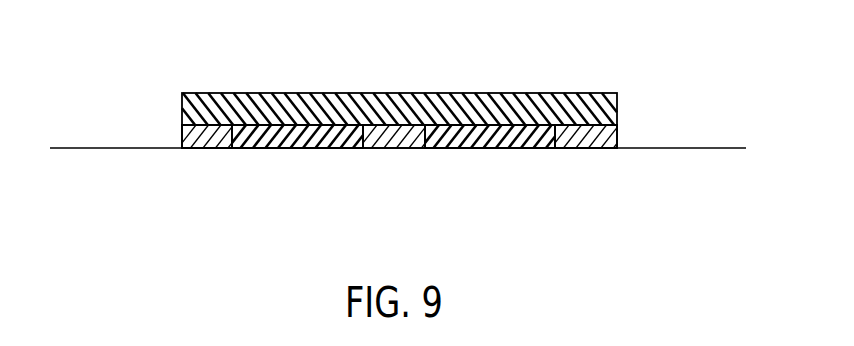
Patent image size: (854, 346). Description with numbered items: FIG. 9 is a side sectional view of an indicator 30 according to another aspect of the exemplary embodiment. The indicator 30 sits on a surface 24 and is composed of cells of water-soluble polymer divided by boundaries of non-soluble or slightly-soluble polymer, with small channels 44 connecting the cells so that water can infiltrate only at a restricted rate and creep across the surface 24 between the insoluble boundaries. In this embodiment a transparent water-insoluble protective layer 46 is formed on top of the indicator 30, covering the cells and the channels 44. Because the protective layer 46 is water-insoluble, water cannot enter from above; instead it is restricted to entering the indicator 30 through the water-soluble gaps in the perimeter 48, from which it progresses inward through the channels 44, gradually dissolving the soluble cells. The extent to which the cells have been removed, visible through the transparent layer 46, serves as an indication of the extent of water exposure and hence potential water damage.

The surface 24 is at (72, 147).
The indicator 30 is at (648, 100).
The channels 44 is at (182, 138).
The transparent water-insoluble protective layer 46 is at (275, 105).
The perimeter 48 is at (370, 84).